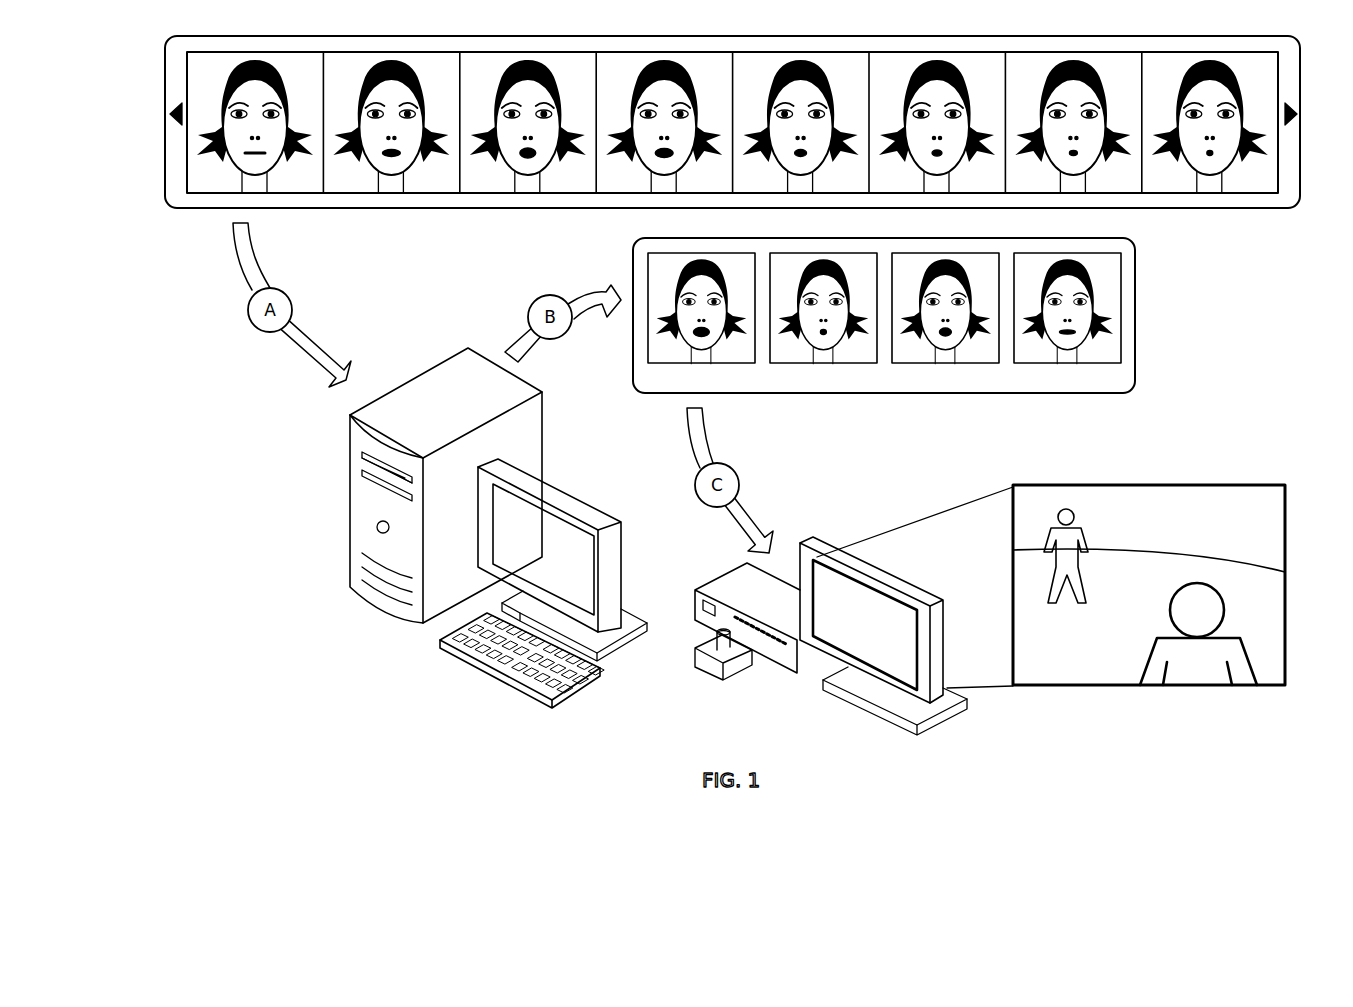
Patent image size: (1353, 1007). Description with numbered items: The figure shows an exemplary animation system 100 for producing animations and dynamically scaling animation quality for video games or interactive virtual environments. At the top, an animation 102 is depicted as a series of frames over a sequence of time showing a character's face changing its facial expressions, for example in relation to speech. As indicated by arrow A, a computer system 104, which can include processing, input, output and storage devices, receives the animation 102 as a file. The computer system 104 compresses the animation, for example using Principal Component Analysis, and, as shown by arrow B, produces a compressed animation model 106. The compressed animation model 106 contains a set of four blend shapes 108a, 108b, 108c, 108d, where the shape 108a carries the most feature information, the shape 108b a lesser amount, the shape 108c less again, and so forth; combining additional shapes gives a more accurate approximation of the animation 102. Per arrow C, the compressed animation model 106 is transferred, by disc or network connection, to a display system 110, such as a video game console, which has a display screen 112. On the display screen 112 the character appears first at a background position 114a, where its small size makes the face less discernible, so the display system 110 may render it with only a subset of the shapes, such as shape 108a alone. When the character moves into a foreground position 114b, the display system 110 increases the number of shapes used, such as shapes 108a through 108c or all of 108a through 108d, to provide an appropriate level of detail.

The animation system 100 is at (234, 728).
The animation 102 is at (248, 37).
The computer system 104 is at (300, 498).
The compressed animation model 106 is at (884, 335).
The shape 108a is at (655, 363).
The shape 108b is at (777, 363).
The shape 108c is at (899, 363).
The shape 108d is at (1021, 363).
The display system 110 is at (750, 697).
The display screen 112 is at (1149, 606).
The background position 114a is at (1071, 509).
The foreground position 114b is at (1182, 586).